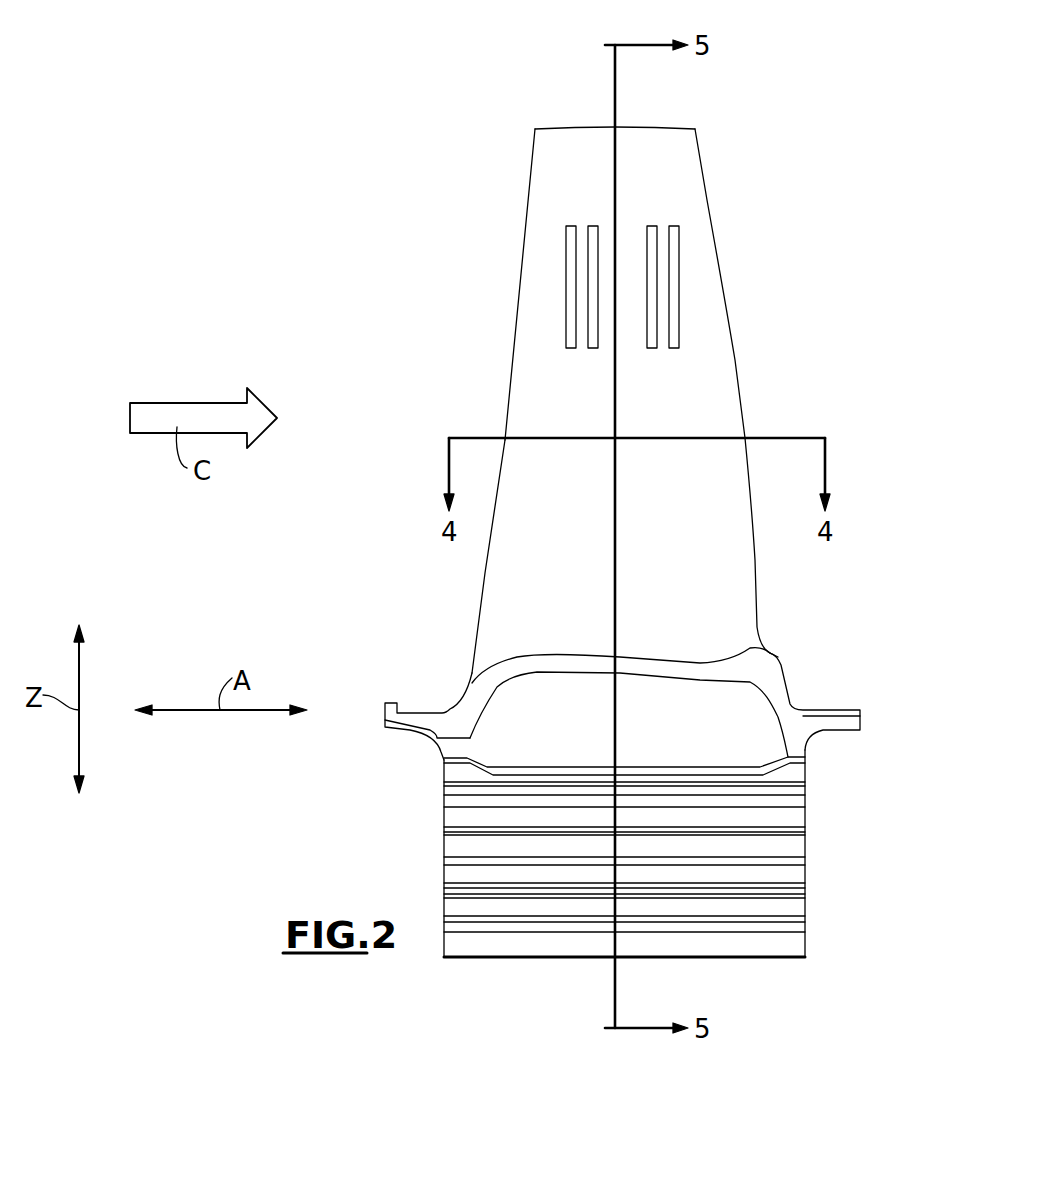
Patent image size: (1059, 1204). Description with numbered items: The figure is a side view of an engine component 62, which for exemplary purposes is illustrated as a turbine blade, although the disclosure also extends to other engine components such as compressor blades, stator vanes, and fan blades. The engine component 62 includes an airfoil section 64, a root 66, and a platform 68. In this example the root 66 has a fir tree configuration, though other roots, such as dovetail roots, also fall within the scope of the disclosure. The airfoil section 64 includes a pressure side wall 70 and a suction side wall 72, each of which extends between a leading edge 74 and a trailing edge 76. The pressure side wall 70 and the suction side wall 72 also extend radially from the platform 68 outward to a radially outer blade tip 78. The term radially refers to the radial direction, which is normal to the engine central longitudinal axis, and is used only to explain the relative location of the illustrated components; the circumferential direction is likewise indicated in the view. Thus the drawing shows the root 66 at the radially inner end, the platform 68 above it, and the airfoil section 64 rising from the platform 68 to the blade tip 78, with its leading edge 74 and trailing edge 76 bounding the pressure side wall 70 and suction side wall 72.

The engine component 62 is at (368, 150).
The airfoil section 64 is at (497, 287).
The root 66 is at (816, 880).
The platform 68 is at (837, 717).
The pressure side wall 70 is at (553, 390).
The suction side wall 72 is at (514, 229).
The leading edge 74 is at (510, 372).
The trailing edge 76 is at (743, 395).
The radially outer blade tip 78 is at (667, 129).